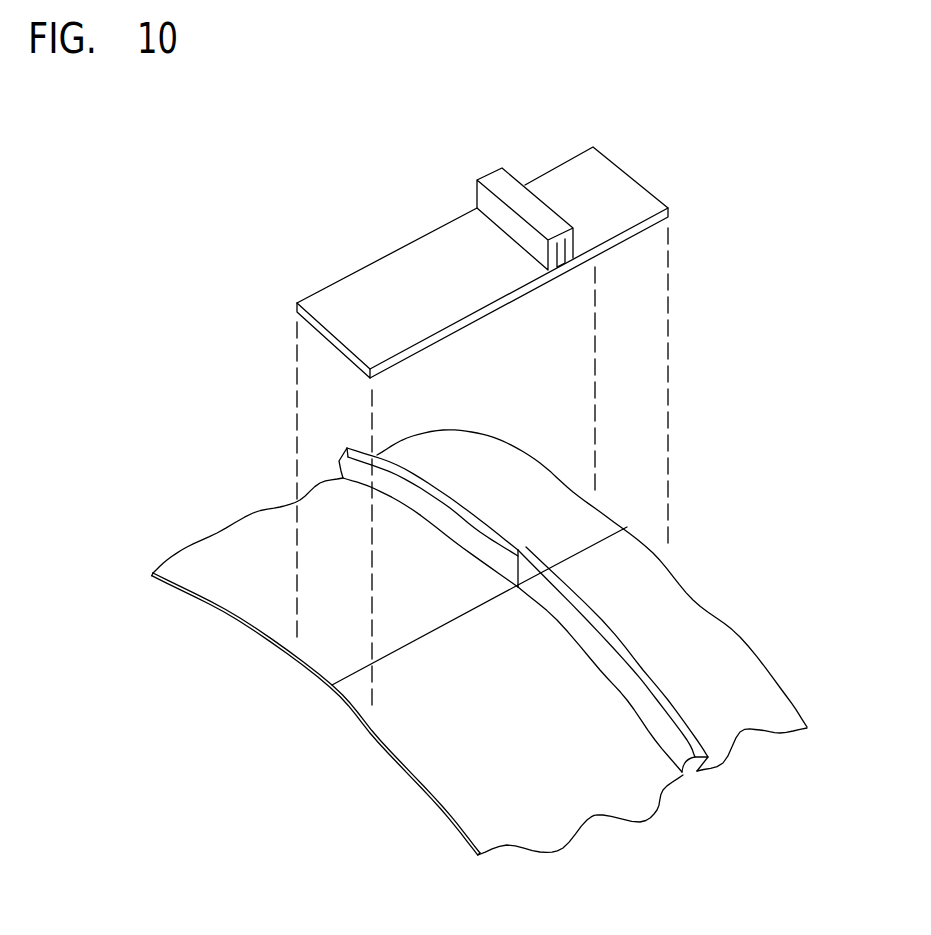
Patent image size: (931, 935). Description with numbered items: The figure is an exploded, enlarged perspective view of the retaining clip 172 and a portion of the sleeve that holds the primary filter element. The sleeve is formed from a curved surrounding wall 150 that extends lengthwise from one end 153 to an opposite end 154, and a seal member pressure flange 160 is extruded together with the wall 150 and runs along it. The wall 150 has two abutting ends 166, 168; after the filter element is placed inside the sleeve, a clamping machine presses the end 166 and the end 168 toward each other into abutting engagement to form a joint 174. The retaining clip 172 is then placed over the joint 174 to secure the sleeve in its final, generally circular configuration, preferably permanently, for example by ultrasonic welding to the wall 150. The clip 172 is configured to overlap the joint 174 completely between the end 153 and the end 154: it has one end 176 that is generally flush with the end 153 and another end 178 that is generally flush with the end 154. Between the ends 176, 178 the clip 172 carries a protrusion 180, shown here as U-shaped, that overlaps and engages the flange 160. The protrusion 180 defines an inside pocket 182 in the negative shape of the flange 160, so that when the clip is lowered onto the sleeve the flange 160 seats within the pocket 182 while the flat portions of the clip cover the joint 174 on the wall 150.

The surrounding wall 150 is at (743, 638).
The end 153 is at (443, 807).
The opposite end 154 is at (787, 697).
The seal member pressure flange 160 is at (445, 488).
The abutting end 166 is at (332, 688).
The abutting end 168 is at (332, 690).
The retaining clip 172 is at (557, 167).
The joint 174 is at (605, 537).
The clip end 176 is at (330, 338).
The clip end 178 is at (640, 180).
The protrusion 180 is at (490, 175).
The inside pocket 182 is at (558, 263).